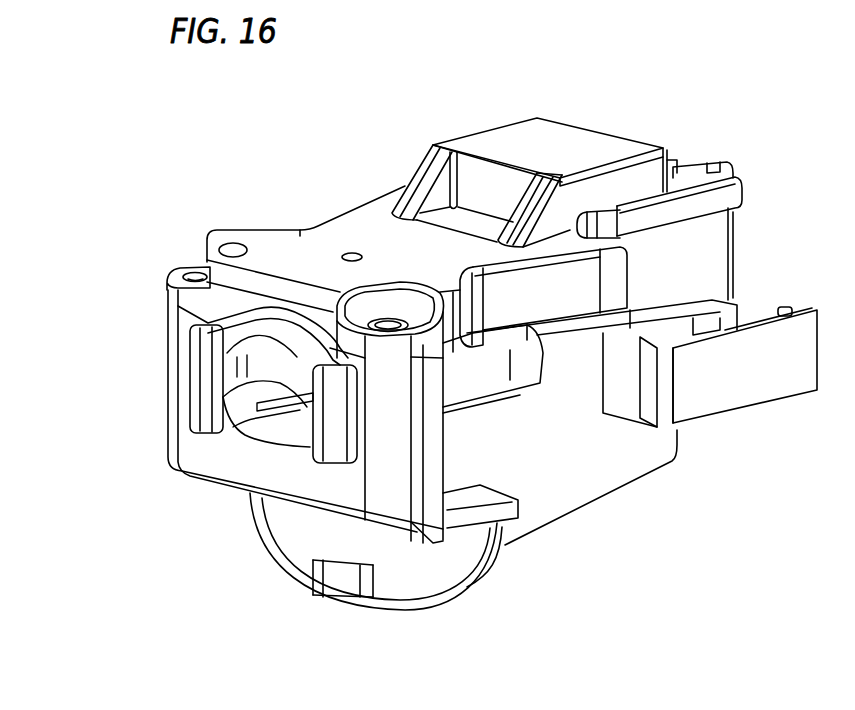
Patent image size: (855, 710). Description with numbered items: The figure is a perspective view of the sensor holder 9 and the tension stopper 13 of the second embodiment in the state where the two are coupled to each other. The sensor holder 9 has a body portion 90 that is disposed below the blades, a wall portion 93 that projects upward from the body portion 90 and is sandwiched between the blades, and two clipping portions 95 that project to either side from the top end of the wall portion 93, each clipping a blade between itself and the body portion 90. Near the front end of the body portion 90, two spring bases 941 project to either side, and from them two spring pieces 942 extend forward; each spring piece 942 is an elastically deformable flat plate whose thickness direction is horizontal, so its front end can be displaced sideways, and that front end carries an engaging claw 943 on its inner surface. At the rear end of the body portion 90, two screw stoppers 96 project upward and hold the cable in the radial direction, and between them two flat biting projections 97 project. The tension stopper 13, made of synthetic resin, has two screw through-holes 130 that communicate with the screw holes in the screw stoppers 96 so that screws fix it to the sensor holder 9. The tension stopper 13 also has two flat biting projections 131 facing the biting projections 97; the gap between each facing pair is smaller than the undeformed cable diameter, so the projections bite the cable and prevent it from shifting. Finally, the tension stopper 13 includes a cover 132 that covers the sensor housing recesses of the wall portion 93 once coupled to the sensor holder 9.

The sensor holder 9 is at (272, 512).
The tension stopper 13 is at (595, 148).
The body portion 90 is at (570, 347).
The wall portion 93 is at (707, 255).
The clipping portion 95 is at (728, 198).
The screw stopper 96 is at (170, 365).
The biting projection 97 is at (240, 412).
The screw through-hole 130 is at (383, 322).
The biting projection 131 is at (335, 312).
The cover 132 is at (513, 133).
The spring base 941 is at (667, 407).
The spring piece 942 is at (757, 377).
The engaging claw 943 is at (788, 308).